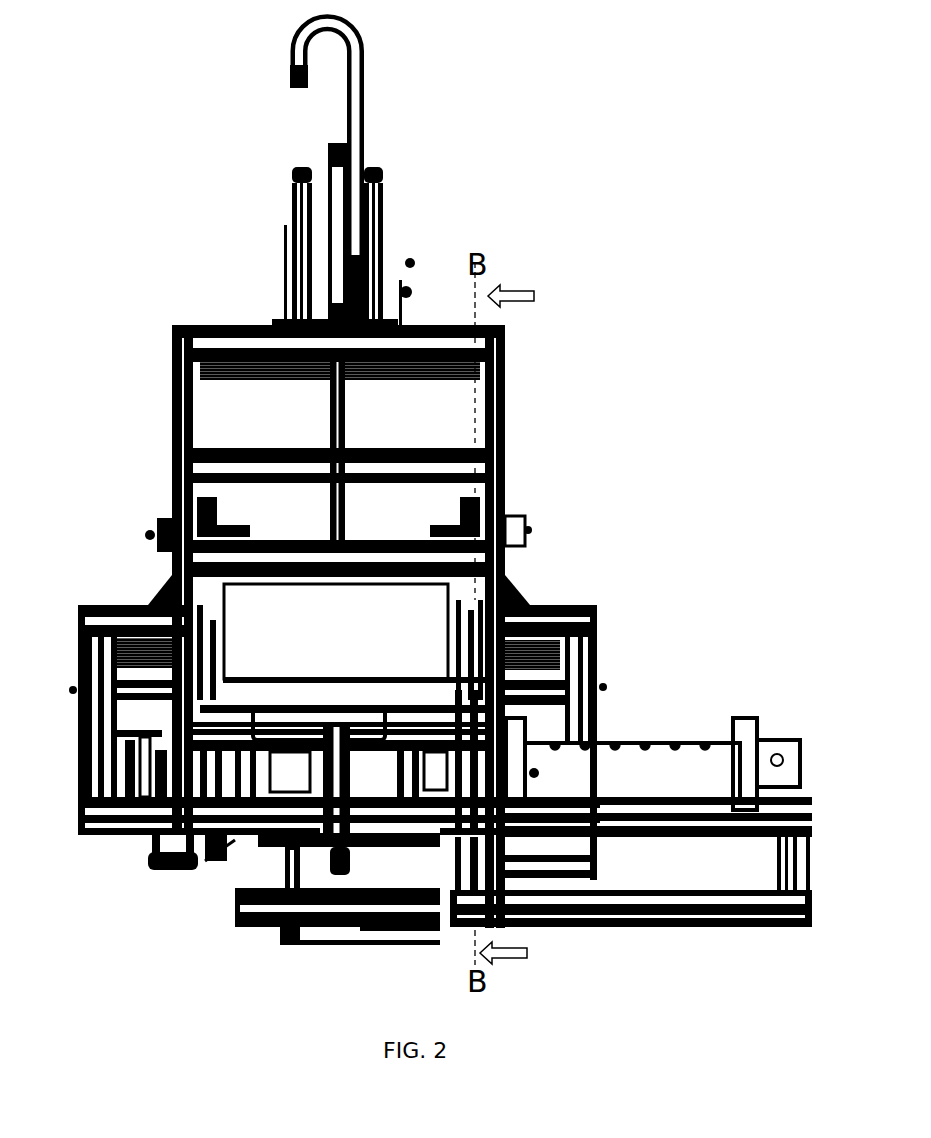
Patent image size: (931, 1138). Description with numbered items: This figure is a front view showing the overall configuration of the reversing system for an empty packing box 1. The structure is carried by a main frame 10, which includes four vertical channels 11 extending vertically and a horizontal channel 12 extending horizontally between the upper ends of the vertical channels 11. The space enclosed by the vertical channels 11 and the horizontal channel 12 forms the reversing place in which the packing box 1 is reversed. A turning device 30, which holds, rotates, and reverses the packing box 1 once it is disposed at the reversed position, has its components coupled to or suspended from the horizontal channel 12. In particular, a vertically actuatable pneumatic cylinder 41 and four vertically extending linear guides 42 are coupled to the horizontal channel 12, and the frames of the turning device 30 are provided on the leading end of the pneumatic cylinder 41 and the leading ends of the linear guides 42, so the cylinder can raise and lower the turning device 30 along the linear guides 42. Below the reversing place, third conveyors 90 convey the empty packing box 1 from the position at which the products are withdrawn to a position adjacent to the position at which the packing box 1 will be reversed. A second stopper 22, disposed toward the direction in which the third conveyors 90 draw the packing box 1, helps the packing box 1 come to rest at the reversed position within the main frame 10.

The packing box 1 is at (392, 648).
The main frame 10 is at (394, 625).
The vertical channels 11 is at (507, 383).
The horizontal channel 12 is at (218, 315).
The second stopper 22 is at (150, 860).
The turning device 30 is at (150, 480).
The pneumatic cylinder 41 is at (313, 153).
The linear guides 42 is at (278, 197).
The third conveyors 90 is at (218, 850).